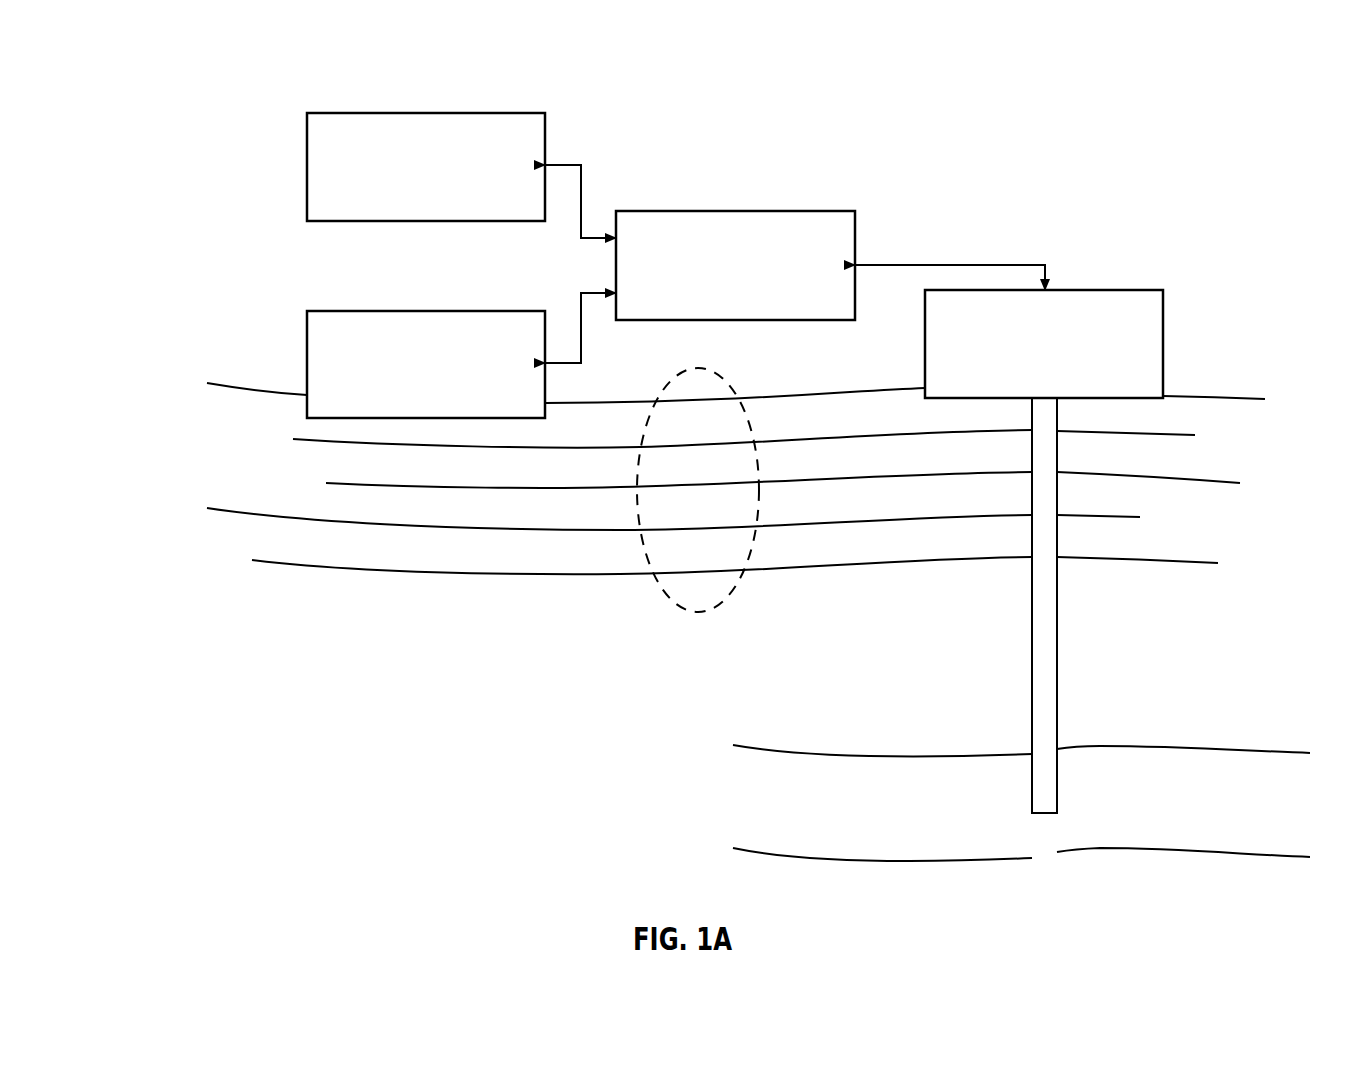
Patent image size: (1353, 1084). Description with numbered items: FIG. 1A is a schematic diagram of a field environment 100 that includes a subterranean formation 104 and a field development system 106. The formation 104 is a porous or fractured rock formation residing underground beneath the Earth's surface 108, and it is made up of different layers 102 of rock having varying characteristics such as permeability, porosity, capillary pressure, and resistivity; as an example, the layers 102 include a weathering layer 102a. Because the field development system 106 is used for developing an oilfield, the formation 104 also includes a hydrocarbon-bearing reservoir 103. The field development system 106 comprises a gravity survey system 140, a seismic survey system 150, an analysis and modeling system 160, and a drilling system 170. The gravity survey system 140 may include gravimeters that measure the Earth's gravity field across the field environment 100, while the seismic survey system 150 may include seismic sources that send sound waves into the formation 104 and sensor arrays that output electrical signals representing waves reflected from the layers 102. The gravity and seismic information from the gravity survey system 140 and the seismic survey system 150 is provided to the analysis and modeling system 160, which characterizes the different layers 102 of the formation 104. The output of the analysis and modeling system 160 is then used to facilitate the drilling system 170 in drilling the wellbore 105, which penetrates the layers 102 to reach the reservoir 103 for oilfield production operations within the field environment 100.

The field environment 100 is at (176, 84).
The layers 102 is at (723, 498).
The weathering layer 102a is at (722, 420).
The hydrocarbon-bearing reservoir 103 is at (907, 840).
The subterranean formation 104 is at (548, 702).
The wellbore 105 is at (1032, 673).
The field development system 106 is at (1070, 193).
The Earth's surface 108 is at (240, 390).
The gravity survey system 140 is at (378, 113).
The seismic survey system 150 is at (378, 311).
The analysis and modeling system 160 is at (688, 211).
The drilling system 170 is at (1097, 290).